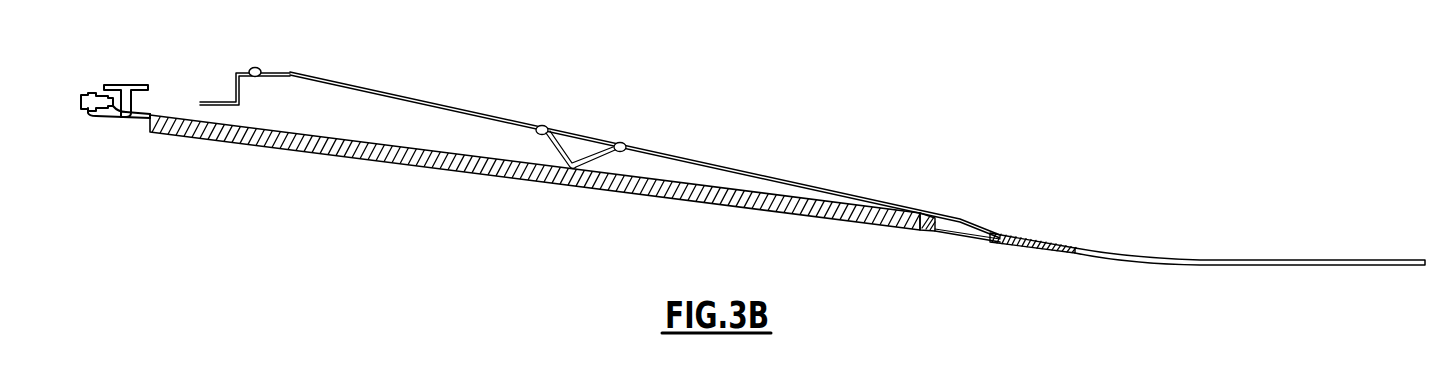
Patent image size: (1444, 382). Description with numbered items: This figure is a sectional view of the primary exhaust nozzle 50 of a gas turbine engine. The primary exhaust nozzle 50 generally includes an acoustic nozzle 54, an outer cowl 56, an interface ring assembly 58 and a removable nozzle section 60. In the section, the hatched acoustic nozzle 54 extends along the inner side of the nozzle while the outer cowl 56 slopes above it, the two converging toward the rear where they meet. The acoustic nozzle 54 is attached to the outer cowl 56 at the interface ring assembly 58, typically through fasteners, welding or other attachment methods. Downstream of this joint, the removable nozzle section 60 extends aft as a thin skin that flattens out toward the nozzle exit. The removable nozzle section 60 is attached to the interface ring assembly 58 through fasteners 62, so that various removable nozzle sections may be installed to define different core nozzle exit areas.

The primary exhaust nozzle 50 is at (992, 105).
The acoustic nozzle 54 is at (492, 175).
The outer cowl 56 is at (657, 151).
The interface ring assembly 58 is at (993, 240).
The removable nozzle section 60 is at (1235, 233).
The fasteners 62 is at (1000, 233).